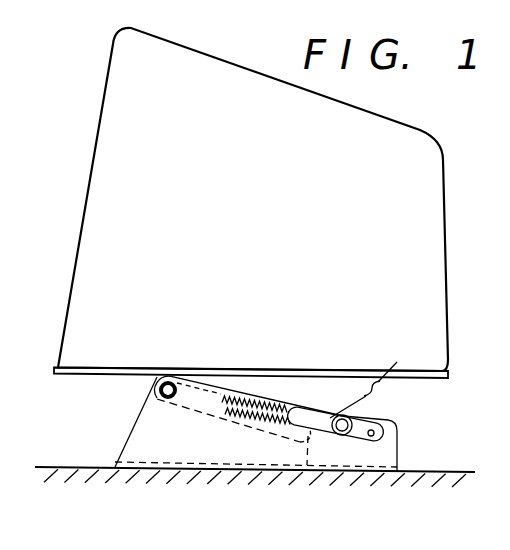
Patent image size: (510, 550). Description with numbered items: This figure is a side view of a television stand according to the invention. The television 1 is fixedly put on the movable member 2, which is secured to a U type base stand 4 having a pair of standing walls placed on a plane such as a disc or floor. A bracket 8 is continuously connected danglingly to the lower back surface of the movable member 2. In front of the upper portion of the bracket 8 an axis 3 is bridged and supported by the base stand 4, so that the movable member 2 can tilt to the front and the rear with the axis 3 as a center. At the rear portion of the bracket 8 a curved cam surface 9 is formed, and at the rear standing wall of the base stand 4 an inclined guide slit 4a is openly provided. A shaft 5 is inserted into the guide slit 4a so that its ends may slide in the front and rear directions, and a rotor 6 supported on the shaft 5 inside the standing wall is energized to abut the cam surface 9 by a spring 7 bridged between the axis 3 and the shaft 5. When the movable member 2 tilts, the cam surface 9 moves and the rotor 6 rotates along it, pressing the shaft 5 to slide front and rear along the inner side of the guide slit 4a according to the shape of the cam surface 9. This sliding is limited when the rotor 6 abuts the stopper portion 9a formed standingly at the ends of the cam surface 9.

The television 1 is at (98, 152).
The movable member 2 is at (52, 369).
The axis 3 is at (177, 379).
The base stand 4 is at (140, 432).
The guide slit 4a is at (378, 440).
The shaft 5 is at (339, 436).
The rotor 6 is at (380, 414).
The spring 7 is at (237, 418).
The bracket 8 is at (253, 388).
The cam surface 9 is at (337, 410).
The stopper portion 9a is at (298, 500).